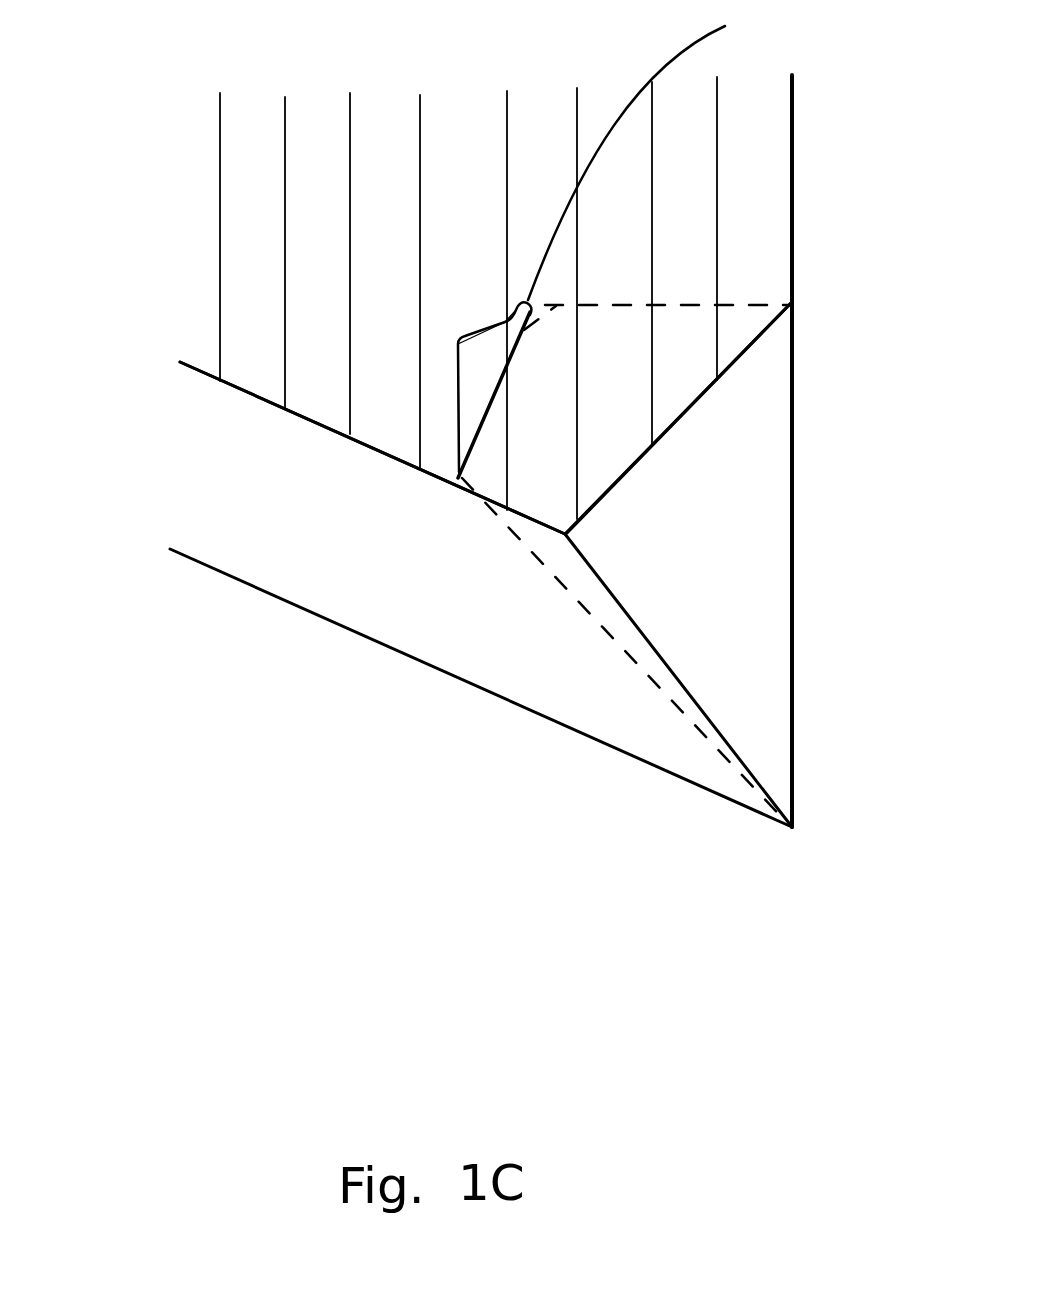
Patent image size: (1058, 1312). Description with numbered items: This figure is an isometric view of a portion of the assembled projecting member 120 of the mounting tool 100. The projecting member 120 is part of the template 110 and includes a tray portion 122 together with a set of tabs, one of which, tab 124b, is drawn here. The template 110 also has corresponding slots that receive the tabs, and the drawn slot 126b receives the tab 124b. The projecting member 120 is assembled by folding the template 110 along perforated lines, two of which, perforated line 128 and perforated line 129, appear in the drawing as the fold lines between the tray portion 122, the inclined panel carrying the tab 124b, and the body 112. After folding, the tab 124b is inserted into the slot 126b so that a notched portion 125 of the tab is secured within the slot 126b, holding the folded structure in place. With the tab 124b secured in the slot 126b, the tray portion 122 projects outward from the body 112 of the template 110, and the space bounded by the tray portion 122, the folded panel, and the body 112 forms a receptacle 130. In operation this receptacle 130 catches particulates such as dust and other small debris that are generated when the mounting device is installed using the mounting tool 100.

The mounting tool 100 is at (118, 90).
The template 110 is at (792, 167).
The body 112 is at (765, 240).
The projecting member 120 is at (814, 559).
The tray portion 122 is at (387, 573).
The tab 124b is at (752, 473).
The notched portion 125 is at (651, 154).
The slot 126b is at (513, 357).
The perforated line 128 is at (663, 653).
The perforated line 129 is at (794, 677).
The receptacle 130 is at (393, 415).